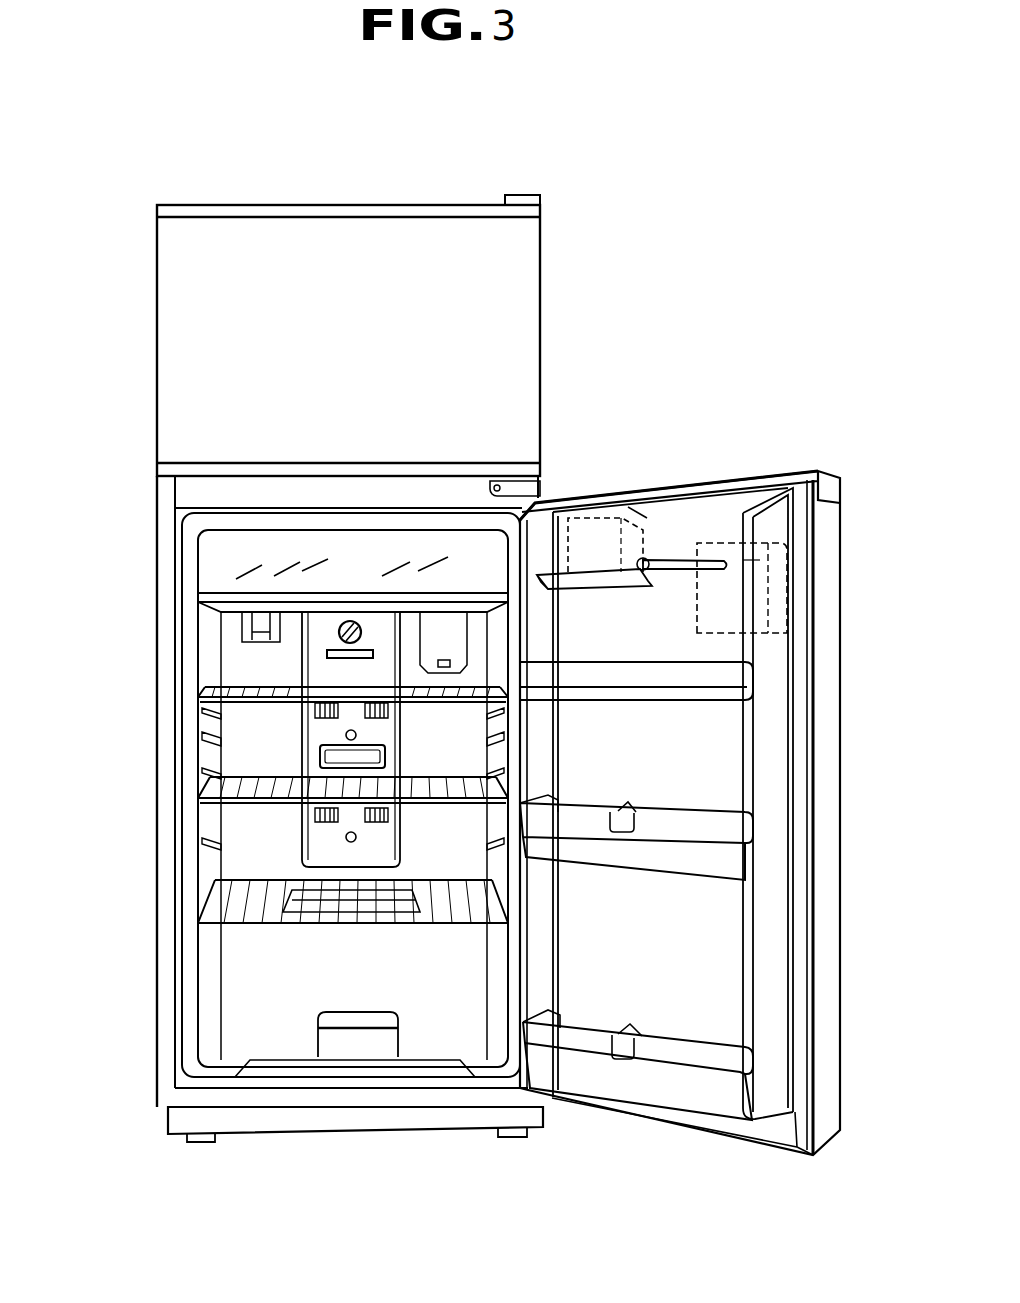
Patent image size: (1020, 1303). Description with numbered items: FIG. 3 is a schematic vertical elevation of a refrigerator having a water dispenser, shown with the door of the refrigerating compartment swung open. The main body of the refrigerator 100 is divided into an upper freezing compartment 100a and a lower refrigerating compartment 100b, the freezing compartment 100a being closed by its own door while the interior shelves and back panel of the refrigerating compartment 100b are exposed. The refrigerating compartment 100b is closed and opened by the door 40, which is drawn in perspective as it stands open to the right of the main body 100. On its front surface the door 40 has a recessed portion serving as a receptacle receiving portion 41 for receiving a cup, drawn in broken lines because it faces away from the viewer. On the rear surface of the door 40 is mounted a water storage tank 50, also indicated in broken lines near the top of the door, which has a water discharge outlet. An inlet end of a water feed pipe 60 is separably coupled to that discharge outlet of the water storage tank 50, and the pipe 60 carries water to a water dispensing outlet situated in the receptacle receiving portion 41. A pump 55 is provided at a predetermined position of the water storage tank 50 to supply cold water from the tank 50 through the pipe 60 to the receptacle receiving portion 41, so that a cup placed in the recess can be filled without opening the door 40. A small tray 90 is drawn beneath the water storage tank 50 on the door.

The main body of the refrigerator 100 is at (548, 337).
The freezing compartment 100a is at (198, 363).
The refrigerating compartment 100b is at (225, 855).
The door 40 is at (777, 674).
The receptacle receiving portion 41 is at (760, 602).
The water storage tank 50 is at (581, 532).
The pump 55 is at (645, 560).
The water feed pipe 60 is at (711, 565).
The tray 90 is at (609, 512).